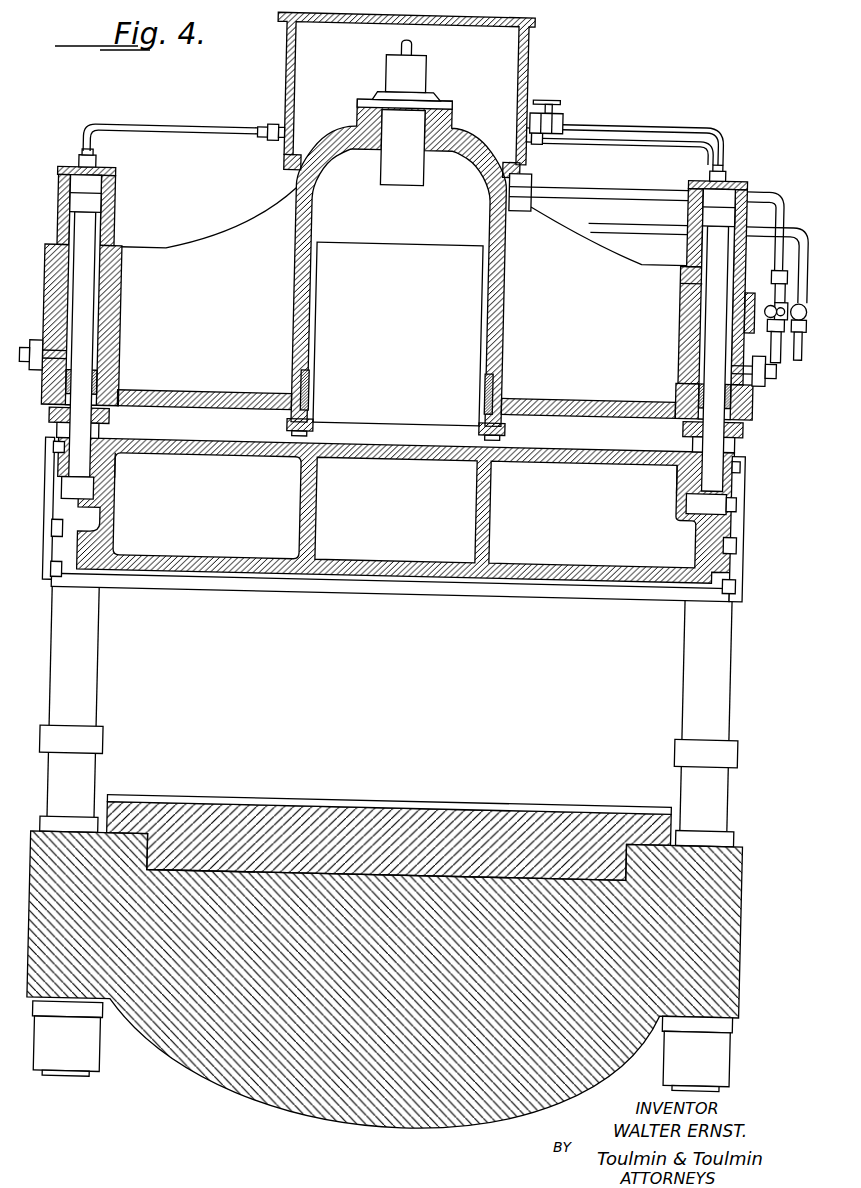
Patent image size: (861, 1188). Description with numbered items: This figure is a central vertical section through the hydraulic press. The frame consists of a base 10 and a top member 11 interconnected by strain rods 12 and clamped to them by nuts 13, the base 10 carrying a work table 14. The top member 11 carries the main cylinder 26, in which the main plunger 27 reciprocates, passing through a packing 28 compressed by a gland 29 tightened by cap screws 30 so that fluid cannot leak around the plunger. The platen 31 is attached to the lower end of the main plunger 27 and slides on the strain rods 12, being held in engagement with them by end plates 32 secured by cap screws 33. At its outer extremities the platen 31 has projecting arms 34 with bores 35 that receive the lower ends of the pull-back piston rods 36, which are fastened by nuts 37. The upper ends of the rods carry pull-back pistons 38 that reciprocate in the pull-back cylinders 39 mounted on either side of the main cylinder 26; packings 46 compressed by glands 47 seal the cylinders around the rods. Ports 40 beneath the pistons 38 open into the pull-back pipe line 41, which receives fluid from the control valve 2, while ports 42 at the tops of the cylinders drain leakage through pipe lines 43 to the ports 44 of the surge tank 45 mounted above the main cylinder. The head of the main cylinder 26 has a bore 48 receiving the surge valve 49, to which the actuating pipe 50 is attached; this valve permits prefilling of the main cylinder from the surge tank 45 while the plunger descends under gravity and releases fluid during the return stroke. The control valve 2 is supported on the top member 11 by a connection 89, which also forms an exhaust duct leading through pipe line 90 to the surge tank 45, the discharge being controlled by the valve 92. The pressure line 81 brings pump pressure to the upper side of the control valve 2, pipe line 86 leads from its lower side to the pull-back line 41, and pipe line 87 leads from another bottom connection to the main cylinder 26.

The control valve 2 is at (778, 355).
The base 10 is at (748, 845).
The top member 11 is at (208, 396).
The strain rods 12 is at (99, 716).
The nuts 13 is at (62, 1078).
The work table 14 is at (255, 808).
The main cylinder 26 is at (287, 268).
The main plunger 27 is at (441, 244).
The packing 28 is at (296, 385).
The gland 29 is at (283, 427).
The cap screws 30 is at (501, 430).
The platen 31 is at (498, 576).
The end plates 32 is at (735, 497).
The cap screws 33 is at (736, 540).
The arms 34 is at (96, 440).
The bores 35 is at (100, 470).
The pull-back piston rods 36 is at (88, 345).
The nuts 37 is at (92, 495).
The pull-back pistons 38 is at (92, 200).
The pull-back cylinders 39 is at (106, 308).
The ports 40 is at (40, 361).
The pipe line 41 is at (772, 368).
The ports 42 is at (86, 168).
The pipe lines 43 is at (193, 131).
The ports 44 is at (262, 141).
The surge tank 45 is at (274, 86).
The packings 46 is at (92, 388).
The glands 47 is at (105, 424).
The bore 48 is at (441, 126).
The surge valve 49 is at (416, 80).
The actuating pipe 50 is at (400, 47).
The pressure line 81 is at (765, 262).
The pipe line 86 is at (795, 219).
The pipe line 87 is at (605, 184).
The connection 89 is at (673, 277).
The pipe line 90 is at (652, 122).
The valve 92 is at (545, 110).